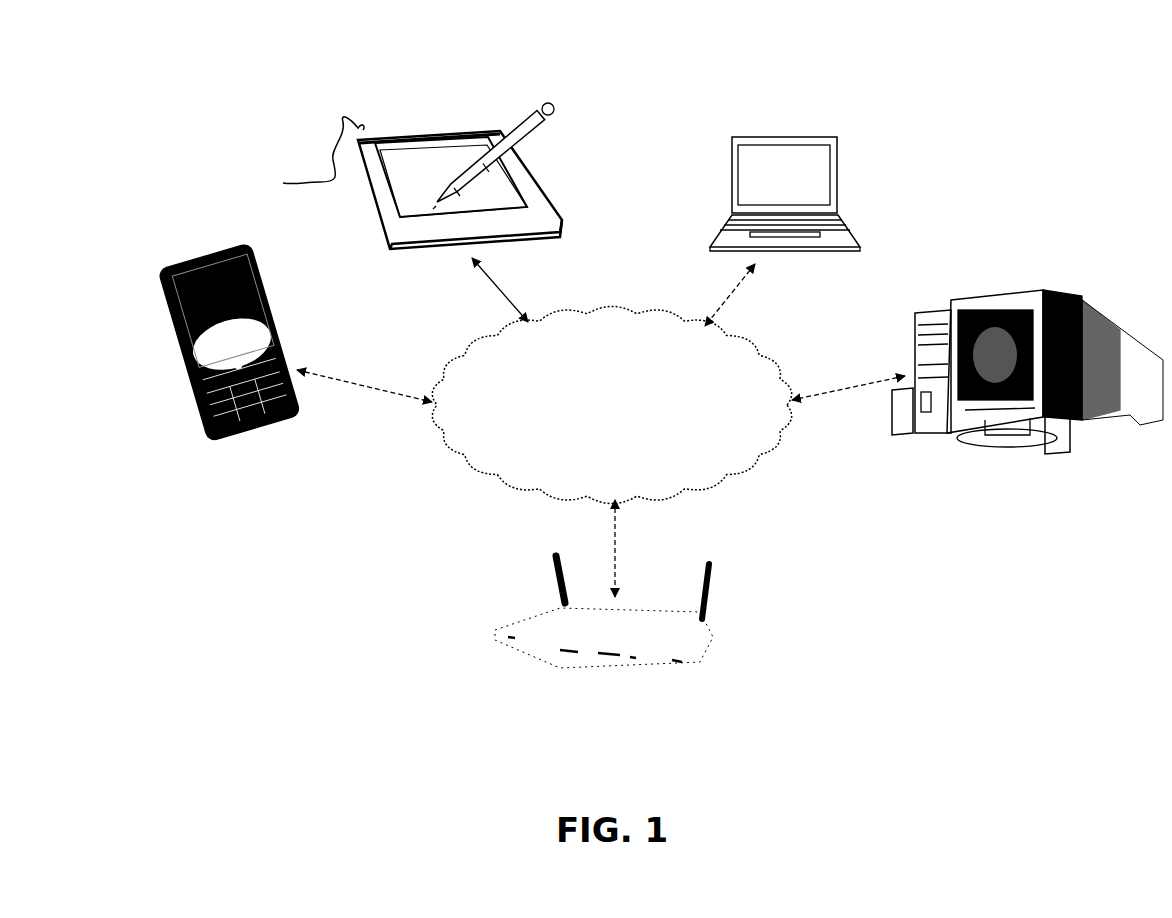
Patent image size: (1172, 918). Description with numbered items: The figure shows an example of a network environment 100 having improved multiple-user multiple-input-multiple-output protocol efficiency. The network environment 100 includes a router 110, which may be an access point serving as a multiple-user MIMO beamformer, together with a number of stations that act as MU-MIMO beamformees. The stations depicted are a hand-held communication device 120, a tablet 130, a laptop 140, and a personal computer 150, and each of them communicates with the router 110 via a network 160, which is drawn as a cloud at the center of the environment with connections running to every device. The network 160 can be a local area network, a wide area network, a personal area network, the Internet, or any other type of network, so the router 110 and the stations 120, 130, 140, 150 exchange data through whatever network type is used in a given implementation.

The network environment 100 is at (992, 90).
The router 110 is at (623, 657).
The hand-held communication device 120 is at (241, 243).
The tablet 130 is at (441, 133).
The laptop 140 is at (793, 136).
The desktop computer 150 is at (1060, 290).
The network 160 is at (631, 427).